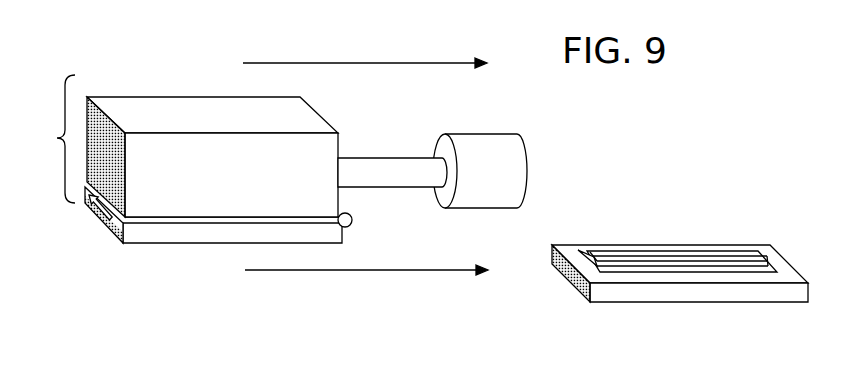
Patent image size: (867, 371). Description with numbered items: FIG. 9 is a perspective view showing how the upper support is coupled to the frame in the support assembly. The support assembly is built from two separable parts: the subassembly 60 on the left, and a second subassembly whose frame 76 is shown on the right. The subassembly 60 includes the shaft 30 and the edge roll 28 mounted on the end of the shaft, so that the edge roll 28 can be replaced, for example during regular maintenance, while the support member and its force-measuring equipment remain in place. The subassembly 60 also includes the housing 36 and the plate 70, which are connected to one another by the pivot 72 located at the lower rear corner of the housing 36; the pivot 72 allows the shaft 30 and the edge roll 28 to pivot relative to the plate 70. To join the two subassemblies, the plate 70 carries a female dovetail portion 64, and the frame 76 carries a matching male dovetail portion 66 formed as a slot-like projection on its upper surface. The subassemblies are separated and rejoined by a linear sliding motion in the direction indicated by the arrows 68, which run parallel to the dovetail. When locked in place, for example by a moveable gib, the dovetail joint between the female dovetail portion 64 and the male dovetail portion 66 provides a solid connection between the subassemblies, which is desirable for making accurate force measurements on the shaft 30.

The edge roll 28 is at (480, 134).
The shaft 30 is at (413, 165).
The housing 36 is at (172, 107).
The subassembly 60 is at (165, 292).
The female dovetail portion 64 is at (97, 223).
The male dovetail portion 66 is at (678, 252).
The linear motion 68 is at (295, 63).
The plate 70 is at (135, 235).
The pivot 72 is at (352, 222).
The frame 76 is at (777, 297).